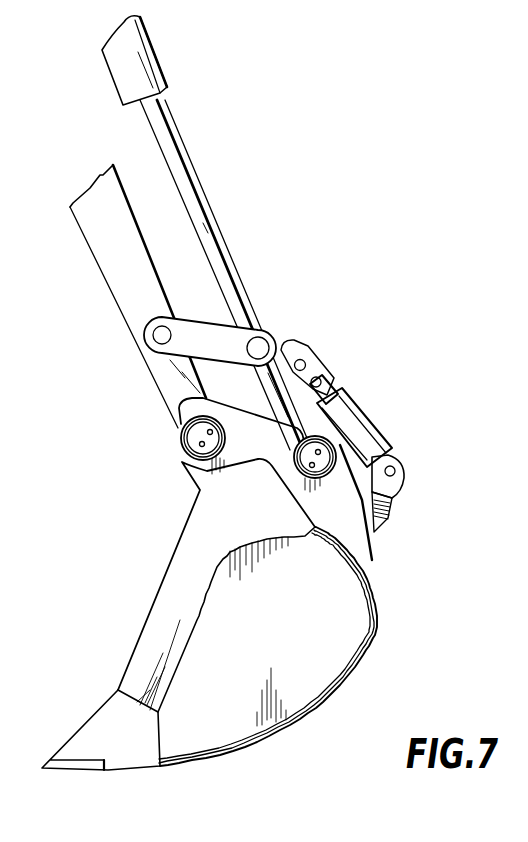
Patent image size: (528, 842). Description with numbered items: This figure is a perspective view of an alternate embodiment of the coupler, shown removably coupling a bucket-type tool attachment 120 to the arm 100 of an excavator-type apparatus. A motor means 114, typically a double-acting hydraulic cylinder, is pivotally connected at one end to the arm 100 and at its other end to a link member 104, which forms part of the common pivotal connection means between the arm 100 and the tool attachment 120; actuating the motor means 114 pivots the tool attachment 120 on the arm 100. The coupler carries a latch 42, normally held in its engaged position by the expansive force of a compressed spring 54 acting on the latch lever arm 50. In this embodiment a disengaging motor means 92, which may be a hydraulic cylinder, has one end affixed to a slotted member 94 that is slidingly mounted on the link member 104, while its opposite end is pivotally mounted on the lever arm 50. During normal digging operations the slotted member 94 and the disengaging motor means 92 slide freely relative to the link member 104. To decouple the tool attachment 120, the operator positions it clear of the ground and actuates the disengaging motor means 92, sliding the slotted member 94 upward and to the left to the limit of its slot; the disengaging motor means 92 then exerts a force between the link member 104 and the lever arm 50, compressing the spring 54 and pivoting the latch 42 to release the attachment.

The arm 100 is at (113, 258).
The motor means 114 is at (195, 210).
The link member 104 is at (268, 377).
The slotted member 94 is at (325, 378).
The disengaging motor means 92 is at (365, 407).
The latch 42 is at (410, 480).
The lever arm 50 is at (395, 495).
The spring 54 is at (387, 523).
The tool attachment 120 is at (337, 697).